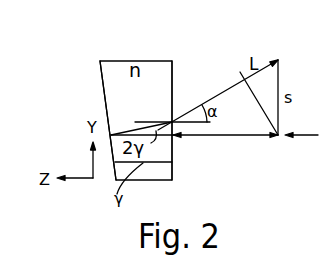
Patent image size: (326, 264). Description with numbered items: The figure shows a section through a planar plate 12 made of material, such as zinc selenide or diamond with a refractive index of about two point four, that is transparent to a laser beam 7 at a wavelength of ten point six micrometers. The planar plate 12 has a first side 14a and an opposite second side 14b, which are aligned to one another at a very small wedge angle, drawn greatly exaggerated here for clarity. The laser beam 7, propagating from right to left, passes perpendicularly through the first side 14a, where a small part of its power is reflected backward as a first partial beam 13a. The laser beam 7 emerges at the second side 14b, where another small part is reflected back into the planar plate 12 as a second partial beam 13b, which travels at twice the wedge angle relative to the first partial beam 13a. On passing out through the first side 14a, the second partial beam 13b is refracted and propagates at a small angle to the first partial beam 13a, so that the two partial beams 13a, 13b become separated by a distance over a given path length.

The planar plate 12 is at (114, 72).
The first side 14a is at (172, 77).
The second side 14b is at (106, 105).
The first partial beam 13a is at (215, 137).
The second partial beam 13b is at (218, 95).
The laser beam 7 is at (310, 134).